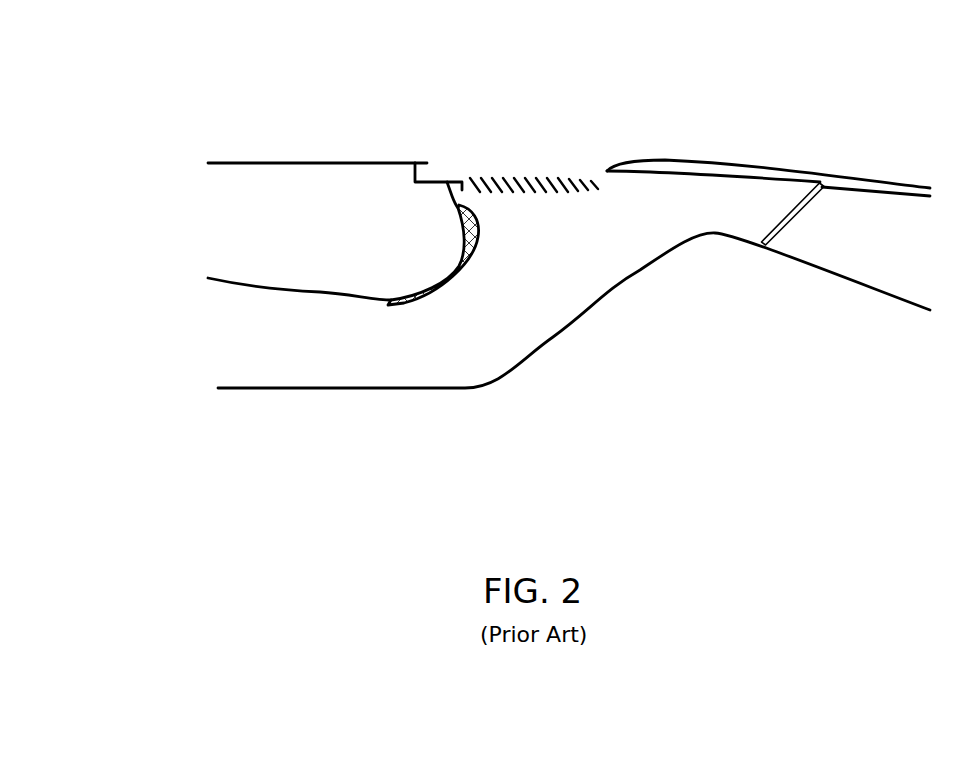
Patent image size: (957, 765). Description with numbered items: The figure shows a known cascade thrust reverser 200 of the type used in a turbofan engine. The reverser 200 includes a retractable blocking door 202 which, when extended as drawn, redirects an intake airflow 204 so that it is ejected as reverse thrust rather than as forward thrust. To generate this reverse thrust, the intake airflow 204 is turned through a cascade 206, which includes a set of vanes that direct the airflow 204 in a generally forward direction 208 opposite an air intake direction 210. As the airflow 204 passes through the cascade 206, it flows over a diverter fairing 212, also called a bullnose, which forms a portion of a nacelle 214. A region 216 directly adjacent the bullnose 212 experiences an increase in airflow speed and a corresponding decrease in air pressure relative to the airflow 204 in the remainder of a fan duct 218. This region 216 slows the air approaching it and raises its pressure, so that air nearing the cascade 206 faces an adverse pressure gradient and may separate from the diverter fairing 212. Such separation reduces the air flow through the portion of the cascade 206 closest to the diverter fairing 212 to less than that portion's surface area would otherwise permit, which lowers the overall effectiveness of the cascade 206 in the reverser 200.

The cascade thrust reverser 200 is at (294, 112).
The retractable blocking door 202 is at (803, 207).
The intake airflow 204 is at (187, 345).
The cascade 206 is at (598, 149).
The forward direction 208 is at (396, 68).
The air intake direction 210 is at (121, 435).
The diverter fairing 212 is at (415, 266).
The nacelle 214 is at (228, 162).
The region 216 is at (495, 255).
The fan duct 218 is at (458, 379).